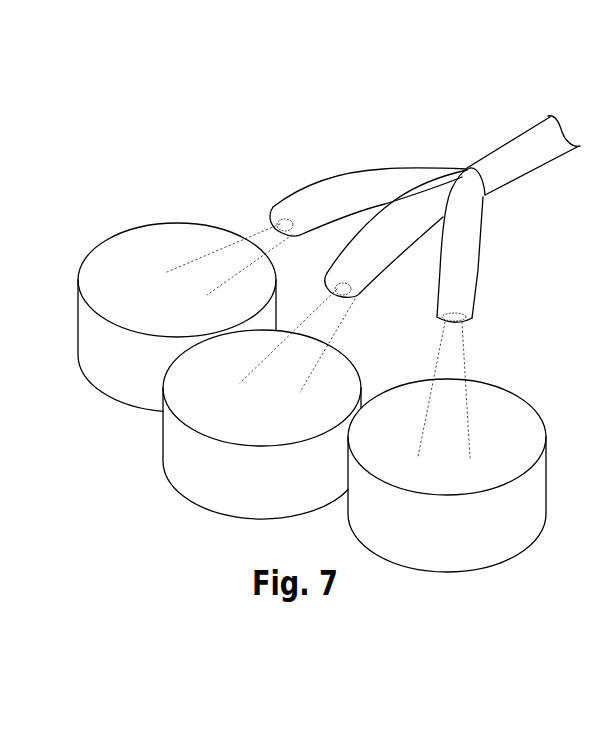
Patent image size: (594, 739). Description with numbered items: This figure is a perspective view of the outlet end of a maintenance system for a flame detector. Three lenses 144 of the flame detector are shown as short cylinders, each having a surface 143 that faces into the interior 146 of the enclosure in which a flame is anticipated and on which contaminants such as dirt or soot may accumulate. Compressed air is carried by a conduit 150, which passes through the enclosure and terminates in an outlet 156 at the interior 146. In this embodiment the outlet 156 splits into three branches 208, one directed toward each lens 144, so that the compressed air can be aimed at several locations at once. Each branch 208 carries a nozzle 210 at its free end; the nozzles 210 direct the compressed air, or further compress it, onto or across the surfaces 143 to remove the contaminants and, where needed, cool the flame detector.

The surface 143 is at (112, 274).
The lens 144 is at (102, 346).
The interior 146 is at (189, 209).
The conduit 150 is at (533, 148).
The outlet 156 is at (483, 172).
The branches 208 is at (392, 233).
The nozzle 210 is at (343, 278).